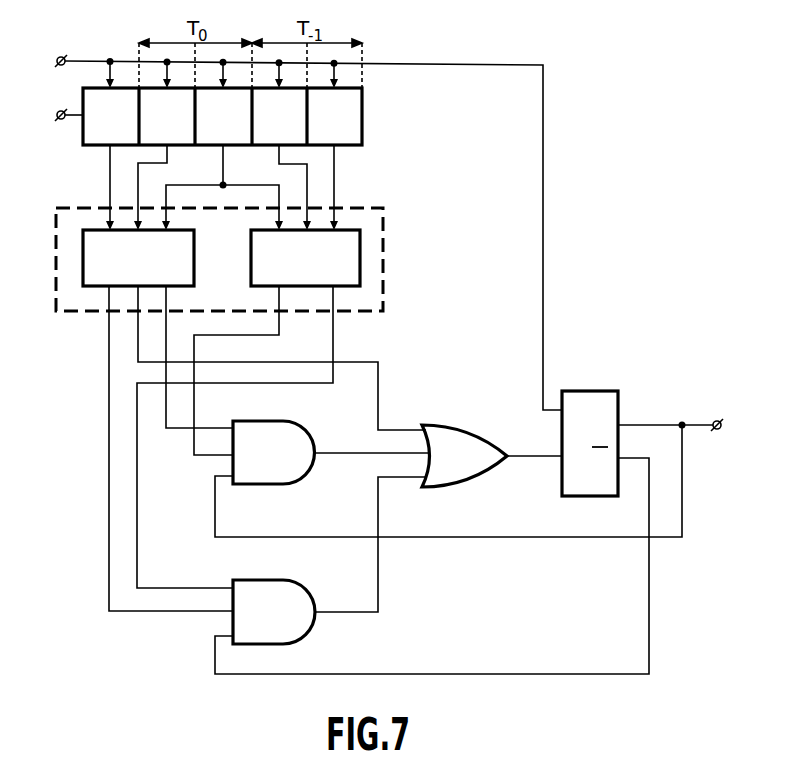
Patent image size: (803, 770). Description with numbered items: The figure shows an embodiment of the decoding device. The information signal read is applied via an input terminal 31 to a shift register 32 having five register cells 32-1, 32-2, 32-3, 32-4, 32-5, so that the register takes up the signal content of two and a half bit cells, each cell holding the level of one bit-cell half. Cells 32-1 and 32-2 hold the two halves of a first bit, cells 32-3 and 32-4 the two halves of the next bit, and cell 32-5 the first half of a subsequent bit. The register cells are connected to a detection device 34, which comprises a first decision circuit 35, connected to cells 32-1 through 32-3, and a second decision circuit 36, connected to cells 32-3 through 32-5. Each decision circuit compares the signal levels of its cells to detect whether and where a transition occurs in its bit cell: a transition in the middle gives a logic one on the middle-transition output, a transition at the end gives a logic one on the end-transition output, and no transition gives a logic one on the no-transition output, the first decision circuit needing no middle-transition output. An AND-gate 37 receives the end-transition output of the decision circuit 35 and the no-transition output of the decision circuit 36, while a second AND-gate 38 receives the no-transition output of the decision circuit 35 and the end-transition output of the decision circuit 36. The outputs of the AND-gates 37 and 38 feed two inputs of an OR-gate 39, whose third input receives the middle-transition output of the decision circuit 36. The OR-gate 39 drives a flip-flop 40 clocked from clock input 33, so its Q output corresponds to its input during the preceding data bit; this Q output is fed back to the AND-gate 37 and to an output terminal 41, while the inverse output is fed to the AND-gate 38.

The input terminal 31 is at (62, 120).
The shift register 32 is at (241, 120).
The register cell 32-1 is at (375, 132).
The register cell 32-2 is at (279, 116).
The register cell 32-3 is at (223, 116).
The register cell 32-4 is at (167, 116).
The register cell 32-5 is at (111, 116).
The clock input 33 is at (61, 56).
The detection device 34 is at (92, 313).
The first decision circuit 35 is at (251, 263).
The second decision circuit 36 is at (194, 255).
The AND-gate 37 is at (318, 427).
The second AND-gate 38 is at (308, 594).
The OR-gate 39 is at (478, 420).
The flip-flop 40 is at (627, 392).
The output terminal 41 is at (713, 421).